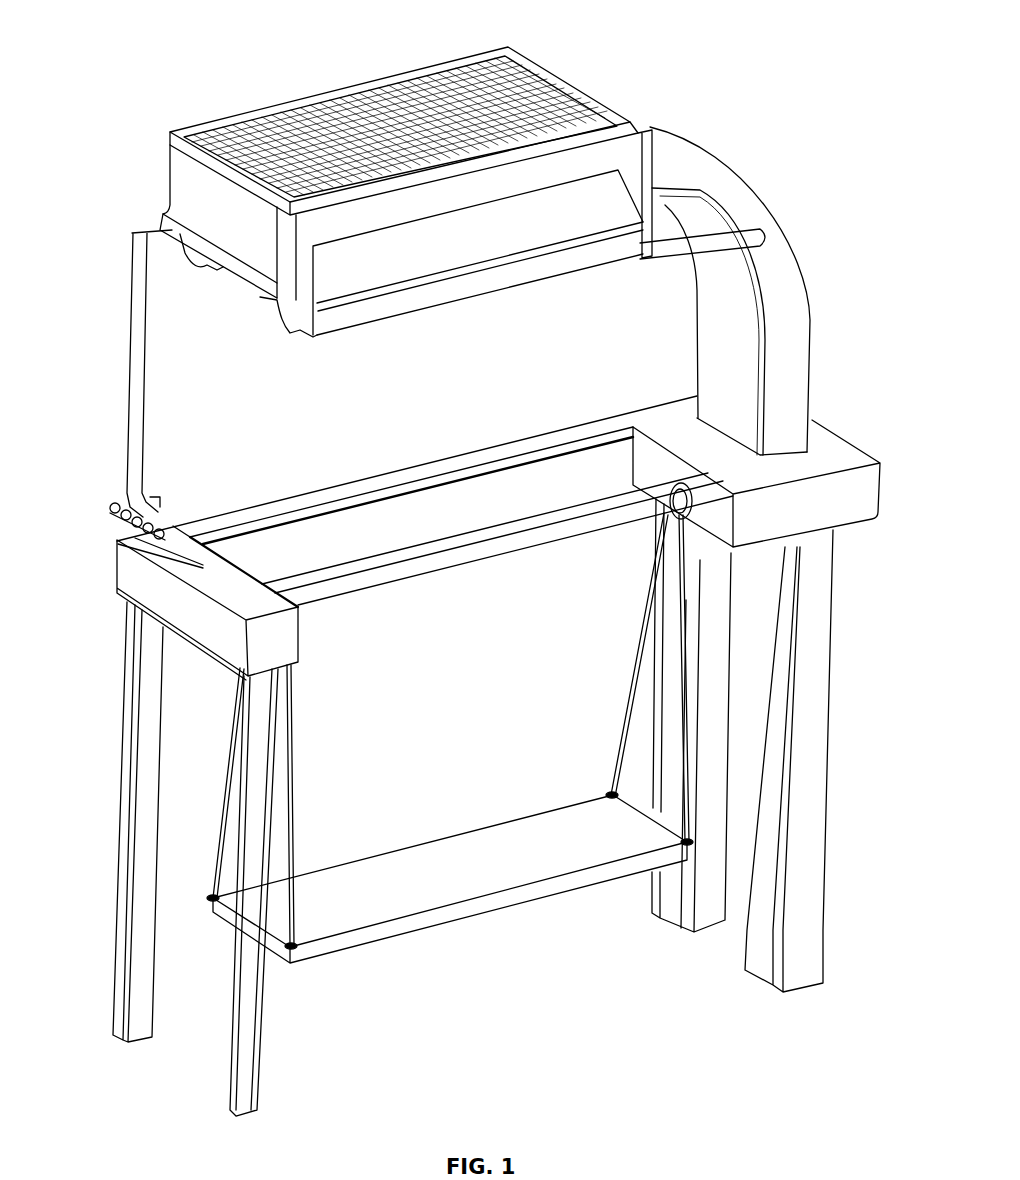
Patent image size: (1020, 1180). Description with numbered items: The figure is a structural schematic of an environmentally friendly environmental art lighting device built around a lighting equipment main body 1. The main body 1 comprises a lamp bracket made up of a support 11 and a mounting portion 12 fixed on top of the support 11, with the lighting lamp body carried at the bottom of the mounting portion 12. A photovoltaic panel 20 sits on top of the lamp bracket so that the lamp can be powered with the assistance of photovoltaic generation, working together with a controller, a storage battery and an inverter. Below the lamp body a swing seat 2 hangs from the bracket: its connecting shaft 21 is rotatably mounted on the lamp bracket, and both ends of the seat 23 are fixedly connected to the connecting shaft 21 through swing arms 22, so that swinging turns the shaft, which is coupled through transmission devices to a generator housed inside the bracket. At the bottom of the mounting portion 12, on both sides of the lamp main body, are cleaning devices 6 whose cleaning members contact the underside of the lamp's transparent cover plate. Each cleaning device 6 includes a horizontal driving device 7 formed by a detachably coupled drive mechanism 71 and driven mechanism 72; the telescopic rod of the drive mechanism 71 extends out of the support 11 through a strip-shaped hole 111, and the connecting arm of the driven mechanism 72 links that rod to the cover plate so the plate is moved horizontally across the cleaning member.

The lighting equipment main body 1 is at (818, 303).
The support 11 is at (857, 445).
The strip-shaped hole 111 is at (173, 567).
The mounting portion 12 is at (643, 155).
The photovoltaic panel 20 is at (370, 100).
The cleaning device 6 is at (407, 297).
The horizontal driving device 7 is at (50, 450).
The drive mechanism 71 is at (113, 510).
The driven mechanism 72 is at (127, 461).
The swing seat 2 is at (480, 627).
The connecting shaft 21 is at (557, 543).
The swing arms 22 is at (632, 670).
The seat 23 is at (593, 813).